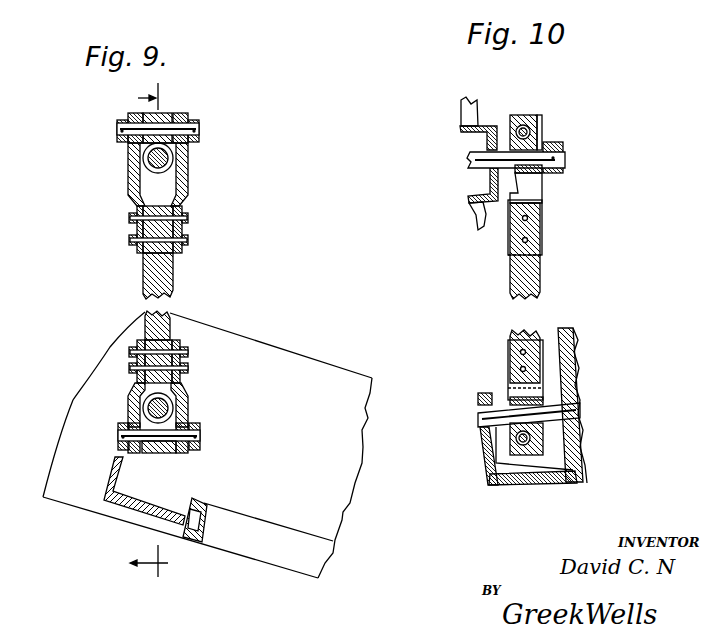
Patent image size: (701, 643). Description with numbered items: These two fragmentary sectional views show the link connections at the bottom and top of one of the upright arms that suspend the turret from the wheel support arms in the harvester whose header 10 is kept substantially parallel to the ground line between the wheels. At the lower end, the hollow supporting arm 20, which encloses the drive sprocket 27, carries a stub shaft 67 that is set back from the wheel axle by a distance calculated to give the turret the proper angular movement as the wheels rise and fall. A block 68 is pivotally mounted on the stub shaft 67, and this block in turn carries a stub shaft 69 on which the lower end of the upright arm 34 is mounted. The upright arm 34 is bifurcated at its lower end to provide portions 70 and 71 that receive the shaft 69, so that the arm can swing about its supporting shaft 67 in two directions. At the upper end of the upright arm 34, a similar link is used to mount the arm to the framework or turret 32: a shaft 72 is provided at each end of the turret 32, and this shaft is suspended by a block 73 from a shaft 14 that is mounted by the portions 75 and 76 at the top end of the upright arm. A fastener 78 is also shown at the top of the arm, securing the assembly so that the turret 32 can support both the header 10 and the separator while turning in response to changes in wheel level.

In FIG. 9, the header mechanism 10 is at (159, 330).
In FIG. 10, the header mechanism 10 is at (540, 390).
In FIG. 9, the bolt 14 is at (118, 130).
In FIG. 10, the bolt 14 is at (547, 130).
In FIG. 9, the supporting arm 20 is at (248, 350).
In FIG. 10, the supporting arm 20 is at (587, 417).
In FIG. 9, the drive sprocket 27 is at (257, 550).
In FIG. 10, the framework 32 is at (458, 110).
In FIG. 9, the upright arm 34 is at (152, 272).
In FIG. 10, the upright arm 34 is at (540, 277).
In FIG. 9, the stub shaft 67 is at (162, 415).
In FIG. 10, the stub shaft 67 is at (477, 418).
In FIG. 9, the block 68 is at (163, 453).
In FIG. 10, the block 68 is at (508, 400).
In FIG. 9, the stub shaft 69 is at (118, 435).
In FIG. 10, the stub shaft 69 is at (525, 457).
In FIG. 9, the bifurcated portion 70 is at (130, 386).
In FIG. 9, the bifurcated portion 71 is at (188, 405).
In FIG. 9, the shaft 72 is at (148, 158).
In FIG. 10, the shaft 72 is at (467, 160).
In FIG. 10, the block 73 is at (537, 117).
In FIG. 9, the top end portion 75 is at (130, 186).
In FIG. 10, the top end portion 75 is at (537, 192).
In FIG. 9, the top end portion 76 is at (190, 195).
In FIG. 9, the cap block 78 is at (152, 113).